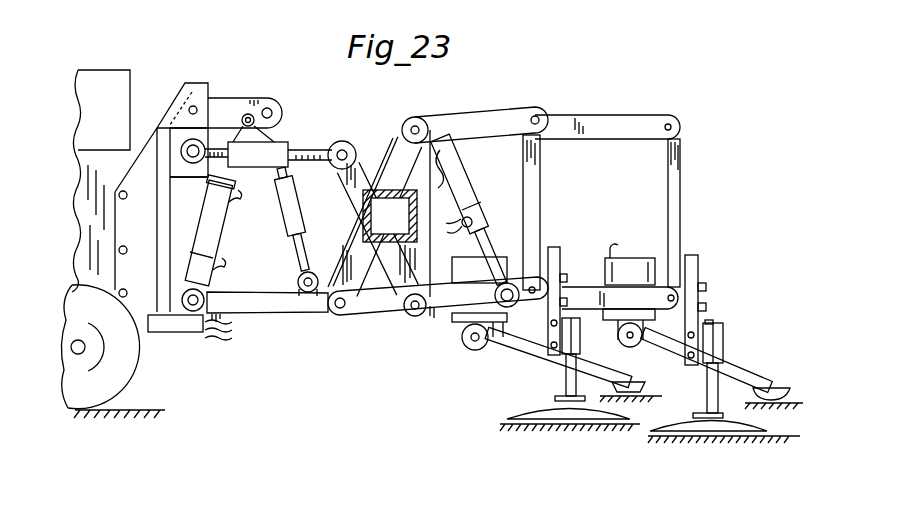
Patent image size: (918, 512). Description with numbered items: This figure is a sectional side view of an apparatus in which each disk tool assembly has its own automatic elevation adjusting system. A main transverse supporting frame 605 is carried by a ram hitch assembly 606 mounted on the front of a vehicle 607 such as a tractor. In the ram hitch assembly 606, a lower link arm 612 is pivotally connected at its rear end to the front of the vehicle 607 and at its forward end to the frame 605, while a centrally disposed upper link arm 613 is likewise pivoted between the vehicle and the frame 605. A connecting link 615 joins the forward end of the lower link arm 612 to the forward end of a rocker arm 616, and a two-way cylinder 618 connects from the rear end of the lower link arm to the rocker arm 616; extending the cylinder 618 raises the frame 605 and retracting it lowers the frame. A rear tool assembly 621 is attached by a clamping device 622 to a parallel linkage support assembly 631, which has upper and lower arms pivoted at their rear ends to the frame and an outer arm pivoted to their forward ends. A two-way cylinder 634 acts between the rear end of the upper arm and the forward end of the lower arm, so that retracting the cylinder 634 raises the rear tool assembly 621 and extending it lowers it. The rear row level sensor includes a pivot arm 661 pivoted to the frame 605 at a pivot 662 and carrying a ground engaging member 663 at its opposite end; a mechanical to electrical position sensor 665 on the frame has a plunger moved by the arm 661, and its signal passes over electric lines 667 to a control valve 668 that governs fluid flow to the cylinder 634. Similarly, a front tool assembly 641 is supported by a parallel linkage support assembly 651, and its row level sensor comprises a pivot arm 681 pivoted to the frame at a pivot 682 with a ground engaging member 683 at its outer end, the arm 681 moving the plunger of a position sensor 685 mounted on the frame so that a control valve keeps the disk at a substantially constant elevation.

The vehicle 607 is at (112, 69).
The ram hitch assembly 606 is at (220, 86).
The rocker arm 616 is at (240, 107).
The upper link arm 613 is at (273, 148).
The main transverse supporting frame 605 is at (386, 190).
The two-way cylinder 618 is at (260, 212).
The connecting link 615 is at (293, 193).
The lower link arm 612 is at (248, 313).
The control valve 668 is at (175, 327).
The electric lines 667 is at (503, 257).
The parallel linkage support assembly 631 is at (530, 108).
The parallel linkage support assembly 651 is at (646, 113).
The mechanical to electrical position sensor 665 is at (520, 243).
The two-way cylinder 634 is at (458, 200).
The clamping device 622 is at (408, 300).
The pivot 662 is at (462, 339).
The pivot arm 661 is at (497, 358).
The ground engaging member 663 is at (672, 387).
The rear tool assembly 621 is at (565, 343).
The pivot 682 is at (603, 320).
The position sensor 685 is at (640, 258).
The pivot arm 681 is at (701, 286).
The front tool assembly 641 is at (725, 322).
The ground engaging member 683 is at (773, 385).